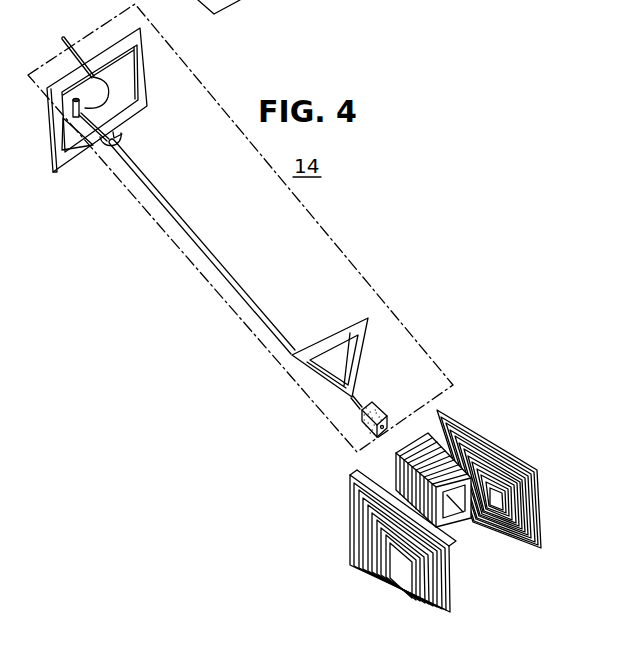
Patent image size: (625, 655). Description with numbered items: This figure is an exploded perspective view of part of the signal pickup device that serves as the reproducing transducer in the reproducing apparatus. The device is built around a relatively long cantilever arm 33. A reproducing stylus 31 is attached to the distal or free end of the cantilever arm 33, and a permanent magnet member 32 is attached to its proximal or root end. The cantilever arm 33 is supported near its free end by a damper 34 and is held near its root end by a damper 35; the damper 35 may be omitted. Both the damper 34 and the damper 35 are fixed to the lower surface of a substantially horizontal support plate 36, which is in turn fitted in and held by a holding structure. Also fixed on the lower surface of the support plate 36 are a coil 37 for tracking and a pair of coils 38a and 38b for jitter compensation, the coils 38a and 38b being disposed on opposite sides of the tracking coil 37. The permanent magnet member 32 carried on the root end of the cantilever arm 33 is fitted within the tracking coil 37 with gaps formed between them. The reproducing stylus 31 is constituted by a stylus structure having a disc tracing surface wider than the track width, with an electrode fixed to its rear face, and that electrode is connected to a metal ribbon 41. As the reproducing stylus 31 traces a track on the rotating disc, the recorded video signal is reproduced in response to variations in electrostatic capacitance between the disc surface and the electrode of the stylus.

The reproducing stylus 31 is at (73, 110).
The permanent magnet member 32 is at (358, 441).
The cantilever arm 33 is at (222, 255).
The damper 34 is at (144, 77).
The damper 35 is at (345, 326).
The support plate 36 is at (350, 250).
The tracking coil 37 is at (453, 519).
The coil for jitter compensation 38a is at (352, 563).
The coil for jitter compensation 38b is at (518, 458).
The metal ribbon 41 is at (63, 40).